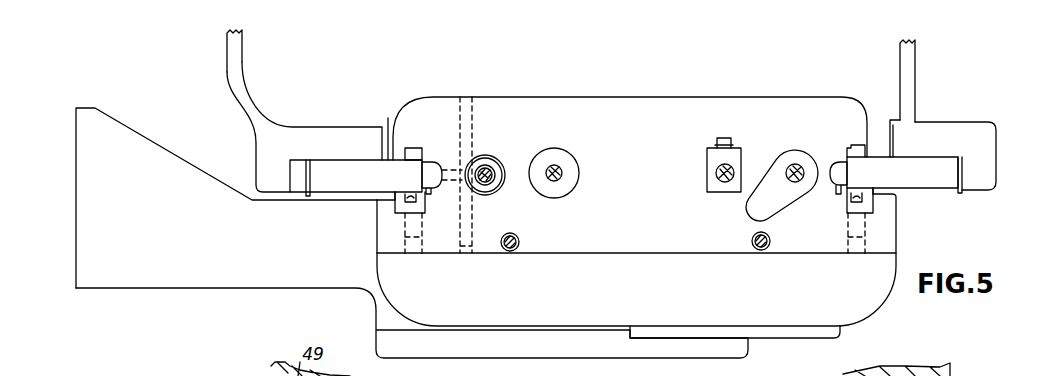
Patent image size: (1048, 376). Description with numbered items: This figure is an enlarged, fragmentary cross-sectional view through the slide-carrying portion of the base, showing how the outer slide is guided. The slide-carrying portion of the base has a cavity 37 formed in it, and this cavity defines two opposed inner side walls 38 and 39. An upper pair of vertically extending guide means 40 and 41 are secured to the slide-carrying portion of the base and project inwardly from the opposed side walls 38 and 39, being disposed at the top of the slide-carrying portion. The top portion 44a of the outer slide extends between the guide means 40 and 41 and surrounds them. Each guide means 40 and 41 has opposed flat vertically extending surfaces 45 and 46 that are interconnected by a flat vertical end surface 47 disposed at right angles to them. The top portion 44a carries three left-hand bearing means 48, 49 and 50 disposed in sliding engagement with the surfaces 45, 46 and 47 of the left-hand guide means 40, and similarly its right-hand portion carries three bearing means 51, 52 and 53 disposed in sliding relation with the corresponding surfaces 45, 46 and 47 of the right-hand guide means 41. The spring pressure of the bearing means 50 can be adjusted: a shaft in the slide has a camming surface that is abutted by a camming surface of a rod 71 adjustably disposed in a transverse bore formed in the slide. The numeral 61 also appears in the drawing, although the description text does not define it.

The cavity 37 is at (797, 53).
The inner side wall 38 is at (393, 122).
The inner side wall 39 is at (888, 128).
The guide means 40 is at (338, 168).
The guide means 41 is at (922, 168).
The top portion of the outer slide 44a is at (607, 108).
The flat vertically extending surface 45 is at (387, 200).
The flat vertically extending surface 46 is at (392, 158).
The flat vertical end surface 47 is at (427, 190).
The left-hand bearing means 48 is at (412, 207).
The left-hand bearing means 49 is at (415, 153).
The left-hand bearing means 50 is at (433, 168).
The bearing means 51 is at (852, 208).
The bearing means 52 is at (857, 147).
The bearing means 53 is at (833, 160).
The base 61 is at (600, 310).
The rod 71 is at (472, 213).